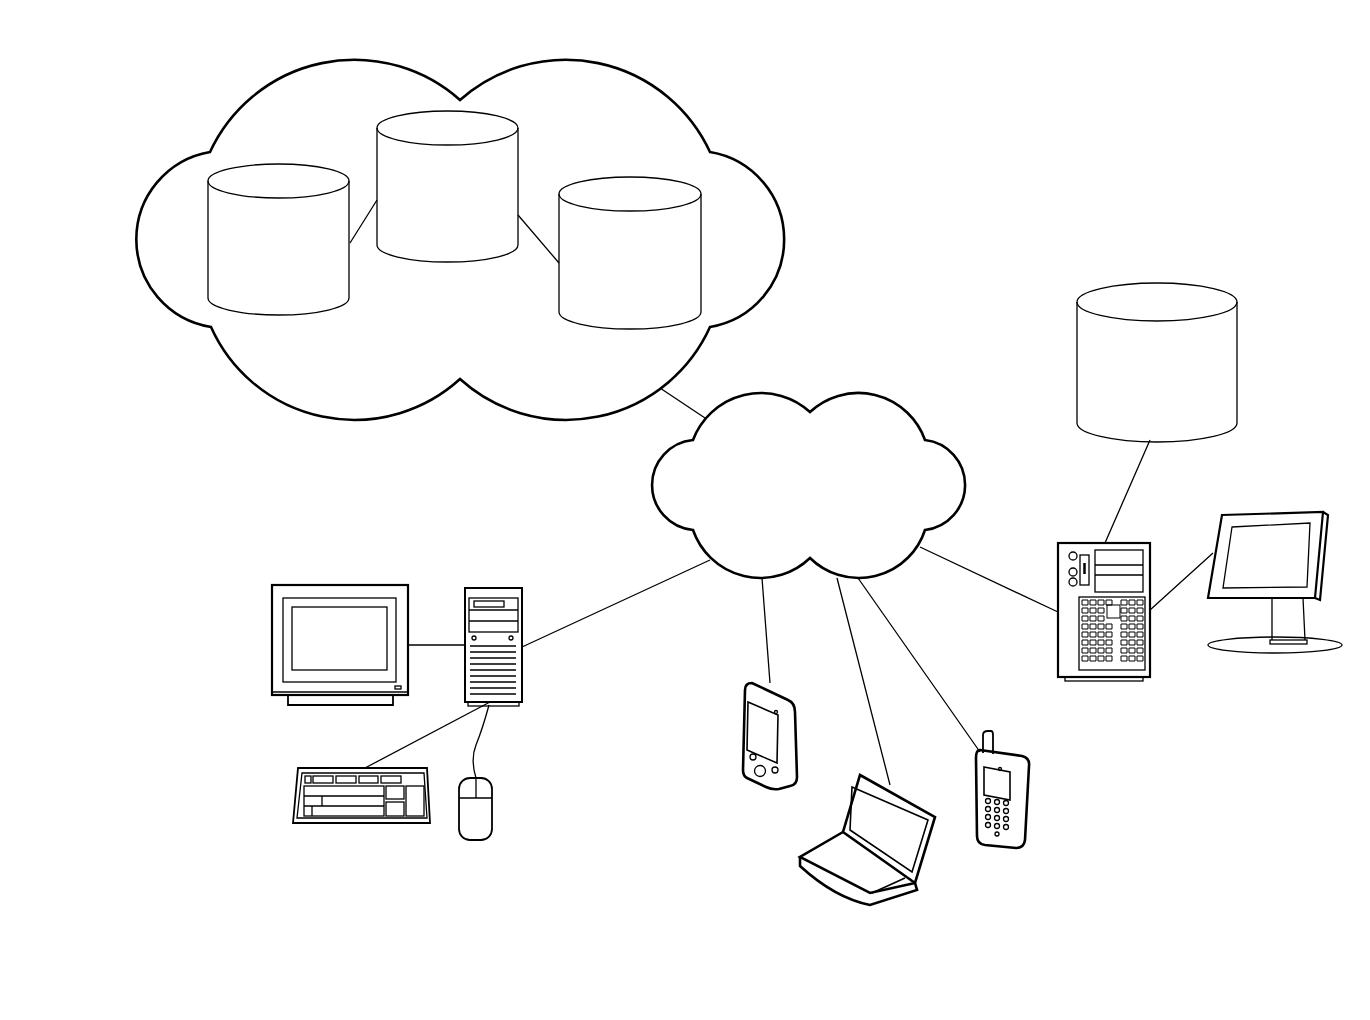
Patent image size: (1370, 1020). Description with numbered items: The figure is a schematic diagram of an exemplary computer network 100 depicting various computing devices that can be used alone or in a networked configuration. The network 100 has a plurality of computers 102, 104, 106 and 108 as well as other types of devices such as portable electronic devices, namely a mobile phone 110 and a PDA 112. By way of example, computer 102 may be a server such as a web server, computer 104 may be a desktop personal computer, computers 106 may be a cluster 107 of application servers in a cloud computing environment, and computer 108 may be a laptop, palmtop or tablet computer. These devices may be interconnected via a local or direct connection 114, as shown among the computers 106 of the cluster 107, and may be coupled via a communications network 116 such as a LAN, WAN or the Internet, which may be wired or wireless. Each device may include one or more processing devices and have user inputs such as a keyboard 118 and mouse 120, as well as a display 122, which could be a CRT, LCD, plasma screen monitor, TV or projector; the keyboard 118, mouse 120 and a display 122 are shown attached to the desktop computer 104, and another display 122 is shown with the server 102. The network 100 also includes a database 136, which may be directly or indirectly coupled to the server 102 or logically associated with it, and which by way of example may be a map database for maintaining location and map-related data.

The computer network 100 is at (887, 111).
The computer 102 is at (1058, 560).
The computer 104 is at (522, 598).
The computers 106 is at (208, 245).
The cluster 107 is at (815, 238).
The computer 108 is at (800, 857).
The mobile phone 110 is at (1028, 796).
The PDA 112 is at (740, 760).
The local or direct connection 114 is at (538, 250).
The communications network 116 is at (833, 499).
The keyboard 118 is at (360, 823).
The mouse 120 is at (492, 797).
The display 122 is at (328, 585).
The database 136 is at (1237, 319).